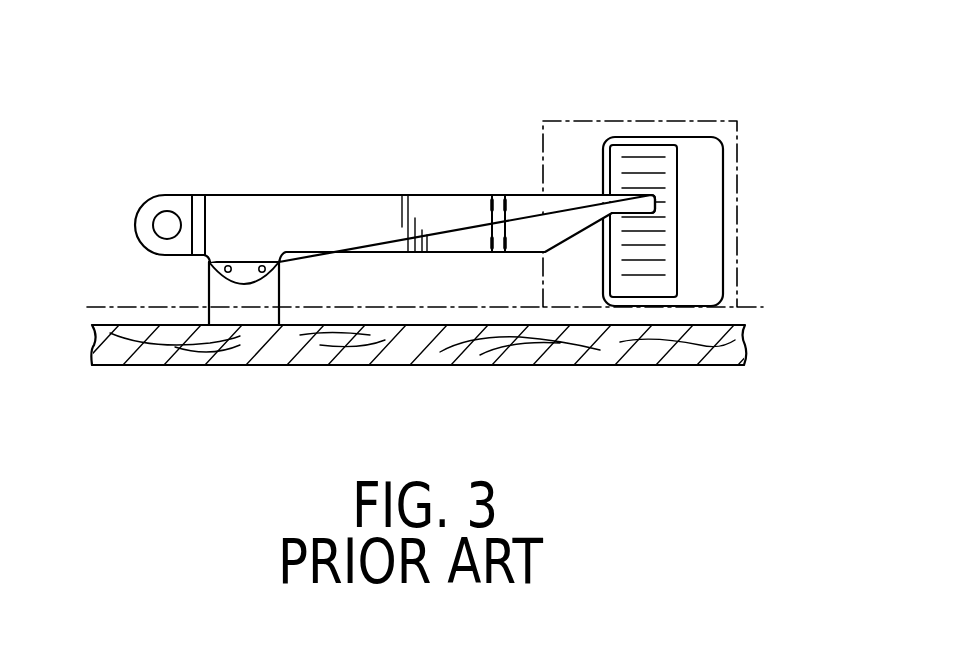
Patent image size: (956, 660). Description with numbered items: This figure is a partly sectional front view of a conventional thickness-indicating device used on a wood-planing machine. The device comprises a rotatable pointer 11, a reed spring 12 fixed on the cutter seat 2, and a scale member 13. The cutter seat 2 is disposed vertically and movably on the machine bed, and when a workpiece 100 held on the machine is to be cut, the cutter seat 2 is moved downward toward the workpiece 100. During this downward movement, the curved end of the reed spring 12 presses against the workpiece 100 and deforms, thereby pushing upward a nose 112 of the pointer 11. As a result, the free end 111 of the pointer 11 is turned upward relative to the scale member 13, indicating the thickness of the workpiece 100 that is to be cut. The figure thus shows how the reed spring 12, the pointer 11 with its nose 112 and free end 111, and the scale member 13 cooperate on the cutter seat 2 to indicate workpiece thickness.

The cutter seat 2 is at (755, 305).
The rotatable pointer 11 is at (352, 205).
The free end 111 is at (642, 198).
The nose 112 is at (237, 278).
The reed spring 12 is at (271, 292).
The scale member 13 is at (677, 170).
The workpiece 100 is at (508, 353).